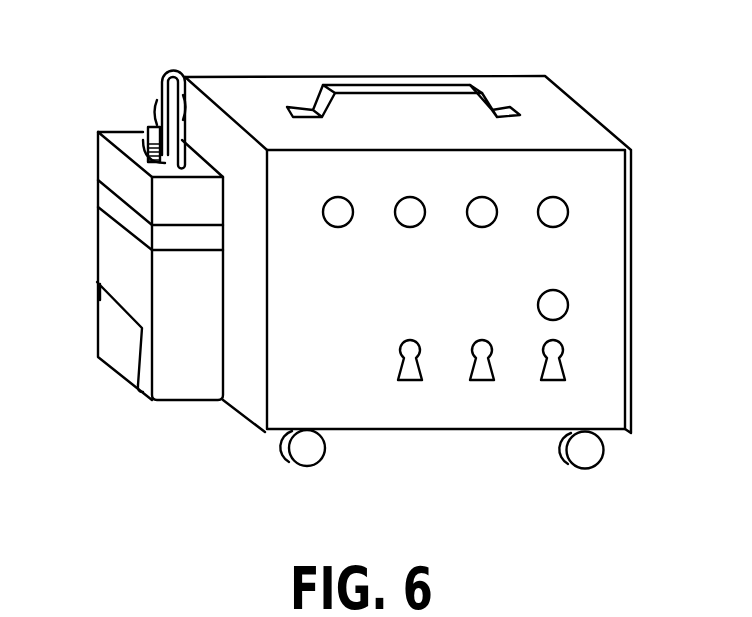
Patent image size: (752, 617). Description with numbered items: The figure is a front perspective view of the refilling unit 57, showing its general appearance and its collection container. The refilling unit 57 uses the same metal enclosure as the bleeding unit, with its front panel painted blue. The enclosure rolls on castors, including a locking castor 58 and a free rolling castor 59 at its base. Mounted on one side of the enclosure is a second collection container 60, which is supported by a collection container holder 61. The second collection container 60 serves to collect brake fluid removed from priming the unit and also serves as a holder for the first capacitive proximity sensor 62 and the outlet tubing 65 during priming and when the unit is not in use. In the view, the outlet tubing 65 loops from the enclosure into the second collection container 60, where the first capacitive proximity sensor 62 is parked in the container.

The refilling unit 57 is at (597, 108).
The locking castor 58 is at (607, 470).
The free rolling castor 59 is at (282, 460).
The second collection container 60 is at (92, 242).
The collection container holder 61 is at (113, 373).
The first capacitive proximity sensor 62 is at (135, 122).
The outlet tubing 65 is at (160, 58).